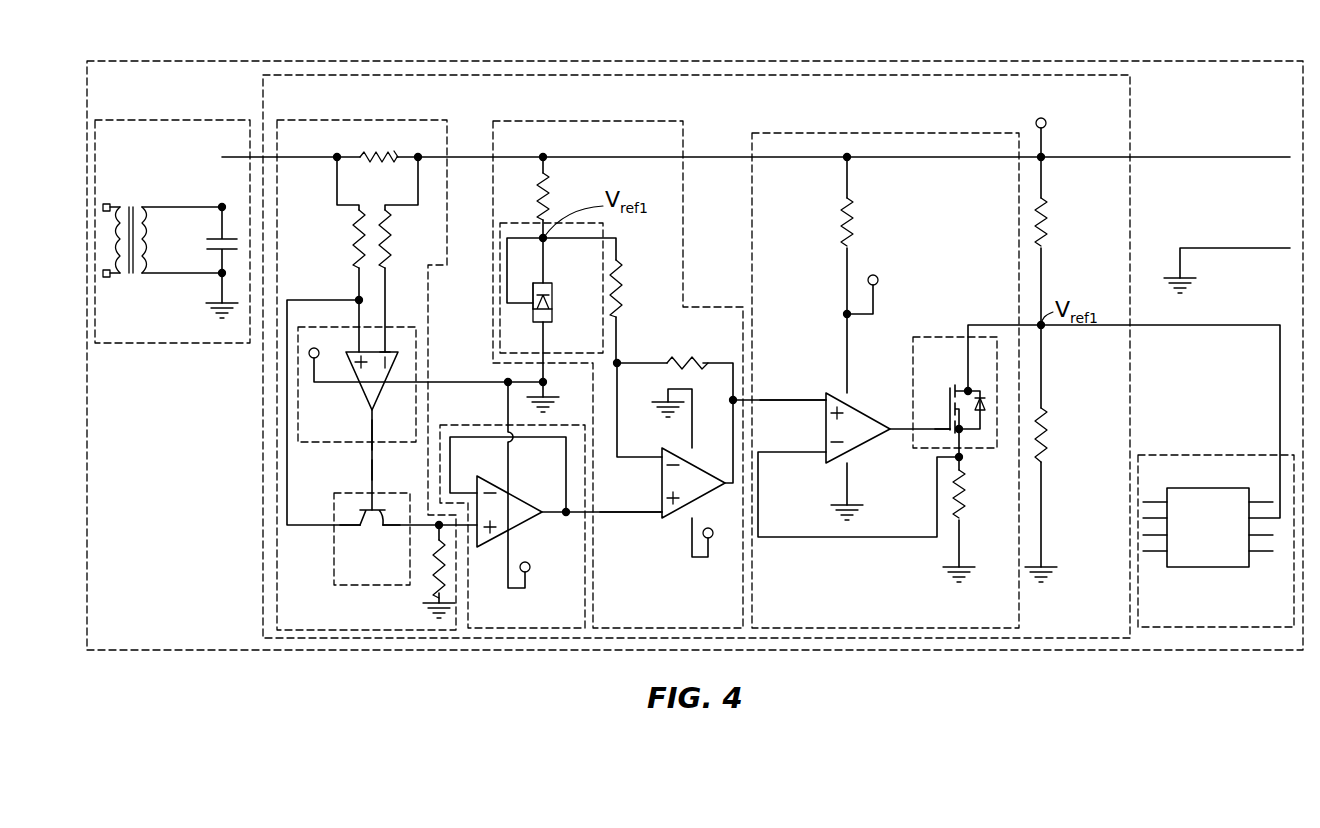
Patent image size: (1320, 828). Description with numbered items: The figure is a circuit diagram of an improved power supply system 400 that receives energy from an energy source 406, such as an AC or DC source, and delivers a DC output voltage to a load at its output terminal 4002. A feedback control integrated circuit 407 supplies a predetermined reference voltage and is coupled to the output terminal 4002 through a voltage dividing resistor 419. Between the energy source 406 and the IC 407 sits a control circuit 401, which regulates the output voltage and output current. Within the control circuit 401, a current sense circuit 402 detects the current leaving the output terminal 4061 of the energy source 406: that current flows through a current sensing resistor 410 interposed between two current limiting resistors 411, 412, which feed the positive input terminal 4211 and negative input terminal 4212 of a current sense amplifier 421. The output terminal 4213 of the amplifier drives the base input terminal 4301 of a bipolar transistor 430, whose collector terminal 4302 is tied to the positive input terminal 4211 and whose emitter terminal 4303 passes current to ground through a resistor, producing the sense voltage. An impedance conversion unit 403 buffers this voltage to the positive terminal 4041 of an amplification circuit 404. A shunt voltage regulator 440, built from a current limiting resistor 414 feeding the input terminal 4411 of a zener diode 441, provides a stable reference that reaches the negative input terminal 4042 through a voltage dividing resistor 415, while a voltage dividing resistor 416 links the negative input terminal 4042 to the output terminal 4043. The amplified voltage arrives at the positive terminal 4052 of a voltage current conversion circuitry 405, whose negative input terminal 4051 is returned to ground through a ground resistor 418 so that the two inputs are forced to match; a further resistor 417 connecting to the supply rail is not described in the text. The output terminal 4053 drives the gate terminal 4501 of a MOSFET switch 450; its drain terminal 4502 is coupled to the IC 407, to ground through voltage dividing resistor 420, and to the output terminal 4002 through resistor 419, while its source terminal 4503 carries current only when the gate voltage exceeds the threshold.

The improved power supply system 400 is at (1250, 92).
The output terminal 4002 is at (1042, 156).
The control circuit 401 is at (1085, 107).
The current sense circuit 402 is at (347, 621).
The impedance conversion unit 403 is at (527, 616).
The amplification circuit 404 is at (650, 616).
The positive terminal 4041 is at (636, 514).
The negative input terminal 4042 is at (640, 458).
The output terminal 4043 is at (726, 485).
The voltage current conversion circuitry 405 is at (818, 619).
The negative input terminal 4051 is at (795, 453).
The positive terminal 4052 is at (796, 402).
The output terminal 4053 is at (891, 431).
The energy source 406 is at (182, 336).
The output terminal 4061 is at (221, 206).
The feedback control integrated circuit 407 is at (1267, 617).
The current sensing resistor 410 is at (378, 156).
The current limiting resistor 411 is at (336, 254).
The current limiting resistor 412 is at (411, 254).
The current limiting resistor 414 is at (570, 196).
The voltage dividing resistor 415 is at (644, 288).
The voltage dividing resistor 416 is at (720, 405).
The resistor 417 is at (876, 274).
The ground resistor 418 is at (980, 505).
The voltage dividing resistor 419 is at (1067, 241).
The voltage dividing resistor 420 is at (1062, 452).
The current sense amplifier 421 is at (348, 436).
The positive input terminal 4211 is at (345, 351).
The negative input terminal 4212 is at (386, 352).
The output terminal 4213 is at (372, 433).
The bipolar transistor 430 is at (403, 581).
The base input terminal 4301 is at (372, 470).
The collector terminal 4302 is at (362, 526).
The emitter terminal 4303 is at (383, 527).
The shunt voltage regulator 440 is at (602, 337).
The zener diode 441 is at (548, 284).
The input terminal 4411 is at (535, 282).
The MOSFET switch 450 is at (962, 366).
The gate terminal 4501 is at (935, 428).
The drain terminal 4502 is at (969, 389).
The source terminal 4503 is at (1055, 392).